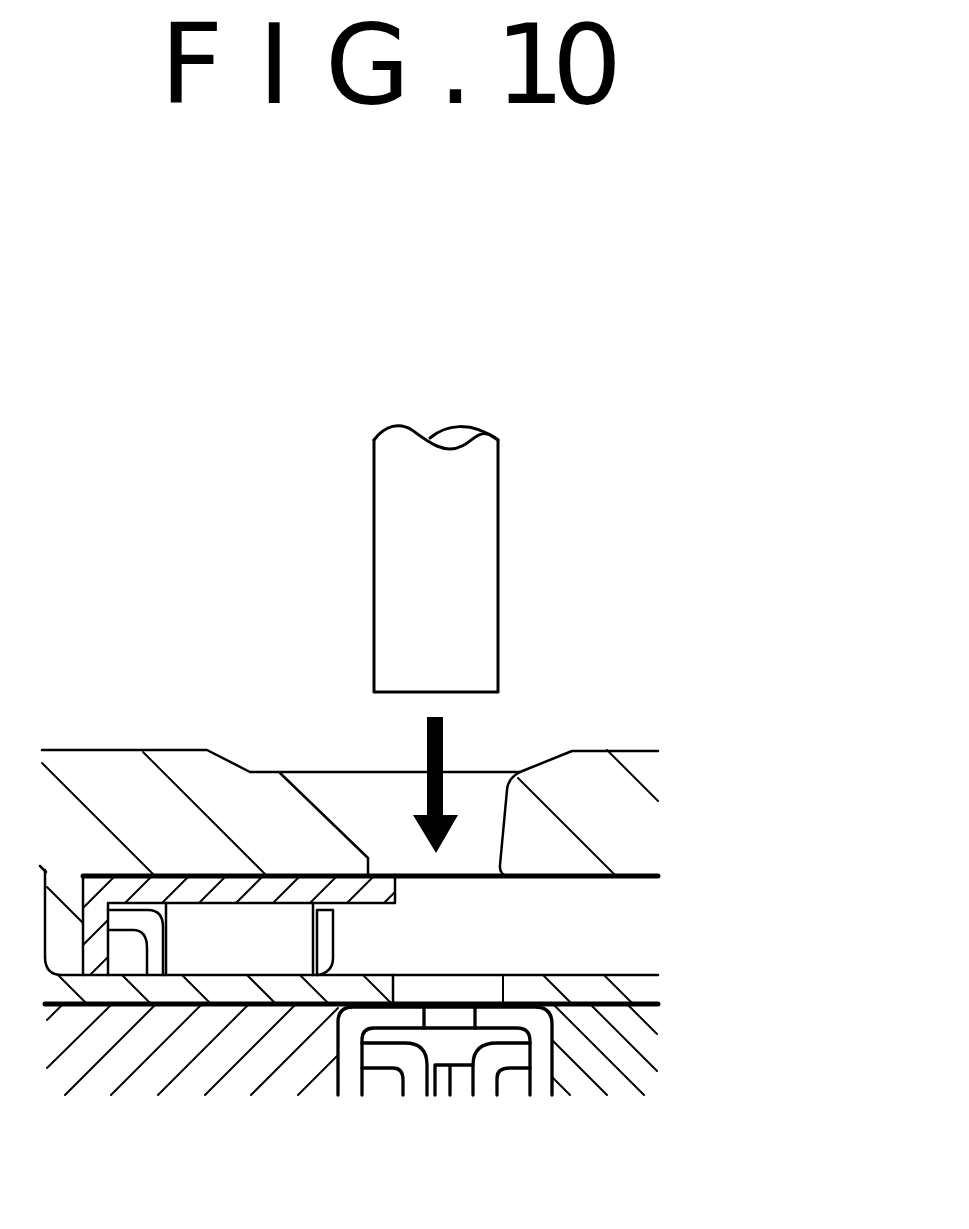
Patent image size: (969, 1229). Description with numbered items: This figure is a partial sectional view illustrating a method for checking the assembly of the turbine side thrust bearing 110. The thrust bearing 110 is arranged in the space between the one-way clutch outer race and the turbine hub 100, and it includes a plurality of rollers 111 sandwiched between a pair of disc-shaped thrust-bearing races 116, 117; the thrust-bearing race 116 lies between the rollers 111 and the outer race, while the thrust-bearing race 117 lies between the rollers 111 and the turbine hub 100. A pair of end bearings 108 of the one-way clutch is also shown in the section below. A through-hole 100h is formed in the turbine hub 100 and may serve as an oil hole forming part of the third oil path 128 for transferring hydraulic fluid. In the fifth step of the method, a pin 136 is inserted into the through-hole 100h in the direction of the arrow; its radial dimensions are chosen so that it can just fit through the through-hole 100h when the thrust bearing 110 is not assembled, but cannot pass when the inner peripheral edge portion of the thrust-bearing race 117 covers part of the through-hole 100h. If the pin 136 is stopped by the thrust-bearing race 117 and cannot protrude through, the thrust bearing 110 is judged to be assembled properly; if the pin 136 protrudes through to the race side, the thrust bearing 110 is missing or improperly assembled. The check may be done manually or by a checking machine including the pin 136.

The turbine hub 100 is at (613, 778).
The through-hole 100h is at (505, 828).
The end bearings 108 is at (497, 1013).
The thrust bearing 110 is at (222, 852).
The rollers 111 is at (238, 958).
The thrust-bearing race 116 is at (125, 985).
The thrust-bearing race 117 is at (130, 890).
The third oil path 128 is at (575, 880).
The pin 136 is at (397, 527).